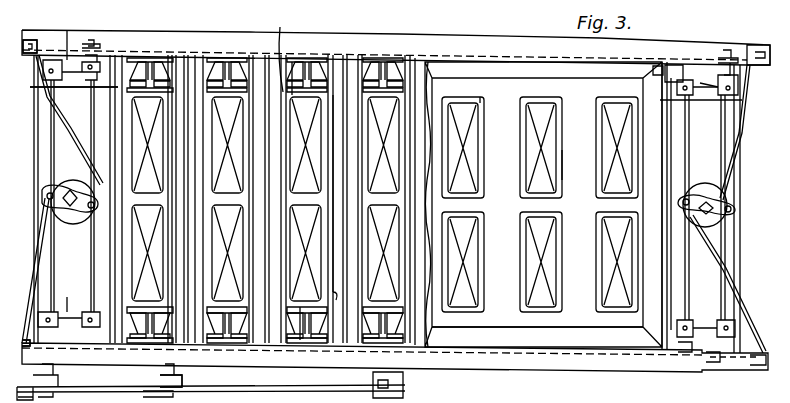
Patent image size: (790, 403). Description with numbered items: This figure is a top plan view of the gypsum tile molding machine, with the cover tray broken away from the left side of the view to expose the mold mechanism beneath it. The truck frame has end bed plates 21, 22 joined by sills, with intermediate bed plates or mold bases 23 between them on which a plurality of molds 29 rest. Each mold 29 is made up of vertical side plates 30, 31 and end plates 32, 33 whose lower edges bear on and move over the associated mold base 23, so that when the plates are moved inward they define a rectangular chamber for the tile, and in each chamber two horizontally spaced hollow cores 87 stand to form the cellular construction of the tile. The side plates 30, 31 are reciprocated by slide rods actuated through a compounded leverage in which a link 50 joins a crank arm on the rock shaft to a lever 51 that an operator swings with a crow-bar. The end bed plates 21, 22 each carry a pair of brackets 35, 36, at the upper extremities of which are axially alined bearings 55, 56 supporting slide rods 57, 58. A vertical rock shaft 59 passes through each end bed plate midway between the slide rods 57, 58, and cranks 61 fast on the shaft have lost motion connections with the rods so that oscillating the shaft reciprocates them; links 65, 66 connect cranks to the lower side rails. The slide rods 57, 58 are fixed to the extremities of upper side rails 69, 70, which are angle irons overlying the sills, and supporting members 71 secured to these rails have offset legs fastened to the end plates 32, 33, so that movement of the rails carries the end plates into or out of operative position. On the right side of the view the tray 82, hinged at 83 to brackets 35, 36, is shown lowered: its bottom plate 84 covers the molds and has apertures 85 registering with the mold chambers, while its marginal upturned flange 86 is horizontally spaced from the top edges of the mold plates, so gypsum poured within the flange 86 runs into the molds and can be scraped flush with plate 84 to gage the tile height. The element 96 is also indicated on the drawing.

The end bed plate 21 is at (40, 143).
The end bed plate 22 is at (734, 263).
The intermediate bed plate or mold base 23 is at (192, 58).
The mold 29 is at (292, 62).
The side plate 30 is at (283, 50).
The side plate 31 is at (336, 300).
The end plate 32 is at (300, 307).
The end plate 33 is at (333, 95).
The bracket 35 is at (67, 30).
The bracket 36 is at (700, 83).
The link 50 is at (87, 395).
The lever 51 is at (413, 382).
The bearing 55 is at (43, 70).
The bearing 56 is at (100, 67).
The slide rod 57 is at (54, 258).
The slide rod 58 is at (95, 101).
The rock shaft 59 is at (70, 190).
The crank 61 is at (47, 197).
The link 65 is at (37, 263).
The link 66 is at (63, 133).
The upper side rail 69 is at (528, 365).
The upper side rail 70 is at (510, 47).
The supporting member 71 is at (225, 60).
The tray 82 is at (449, 73).
The hinge 83 is at (663, 65).
The bottom plate 84 is at (543, 204).
The aperture 85 is at (563, 174).
The marginal upturned flange 86 is at (623, 320).
The hollow core 87 is at (543, 253).
The rail foot 96 is at (182, 382).